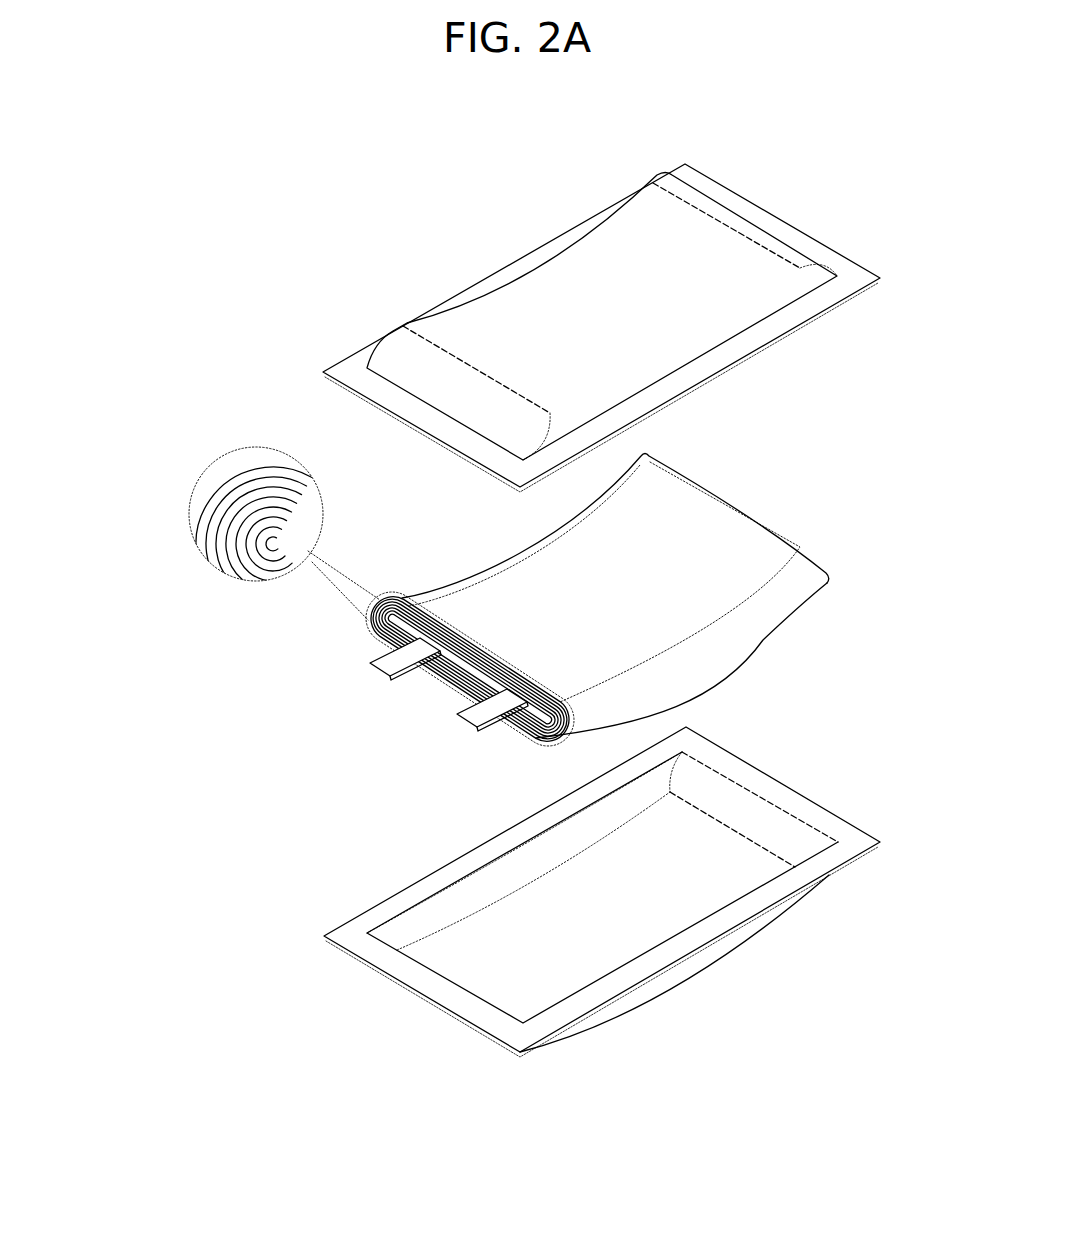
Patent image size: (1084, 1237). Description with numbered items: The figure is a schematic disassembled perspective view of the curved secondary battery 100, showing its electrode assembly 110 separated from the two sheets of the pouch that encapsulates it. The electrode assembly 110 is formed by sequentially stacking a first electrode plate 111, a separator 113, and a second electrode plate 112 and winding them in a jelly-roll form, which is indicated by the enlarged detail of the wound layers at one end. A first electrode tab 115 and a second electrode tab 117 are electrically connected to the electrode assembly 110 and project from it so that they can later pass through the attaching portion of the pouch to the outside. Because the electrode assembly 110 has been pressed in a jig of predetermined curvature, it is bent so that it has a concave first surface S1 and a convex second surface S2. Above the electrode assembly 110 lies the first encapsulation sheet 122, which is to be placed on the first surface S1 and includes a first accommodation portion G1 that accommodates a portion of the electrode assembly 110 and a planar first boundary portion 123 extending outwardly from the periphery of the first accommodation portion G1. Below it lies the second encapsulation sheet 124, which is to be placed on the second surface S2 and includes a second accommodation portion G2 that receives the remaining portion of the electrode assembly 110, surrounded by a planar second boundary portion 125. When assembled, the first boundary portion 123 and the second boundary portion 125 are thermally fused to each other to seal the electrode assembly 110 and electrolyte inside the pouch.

The curved secondary battery 100 is at (307, 230).
The electrode assembly 110 is at (543, 580).
The first electrode plate 111 is at (253, 553).
The second electrode plate 112 is at (247, 507).
The separator 113 is at (247, 530).
The first electrode tab 115 is at (385, 667).
The second electrode tab 117 is at (473, 715).
The first encapsulation sheet 122 is at (747, 228).
The first boundary portion 123 is at (822, 250).
The second encapsulation sheet 124 is at (687, 977).
The second boundary portion 125 is at (790, 795).
The first accommodation portion G1 is at (708, 300).
The second accommodation portion G2 is at (547, 917).
The first surface S1 is at (730, 553).
The second surface S2 is at (765, 640).